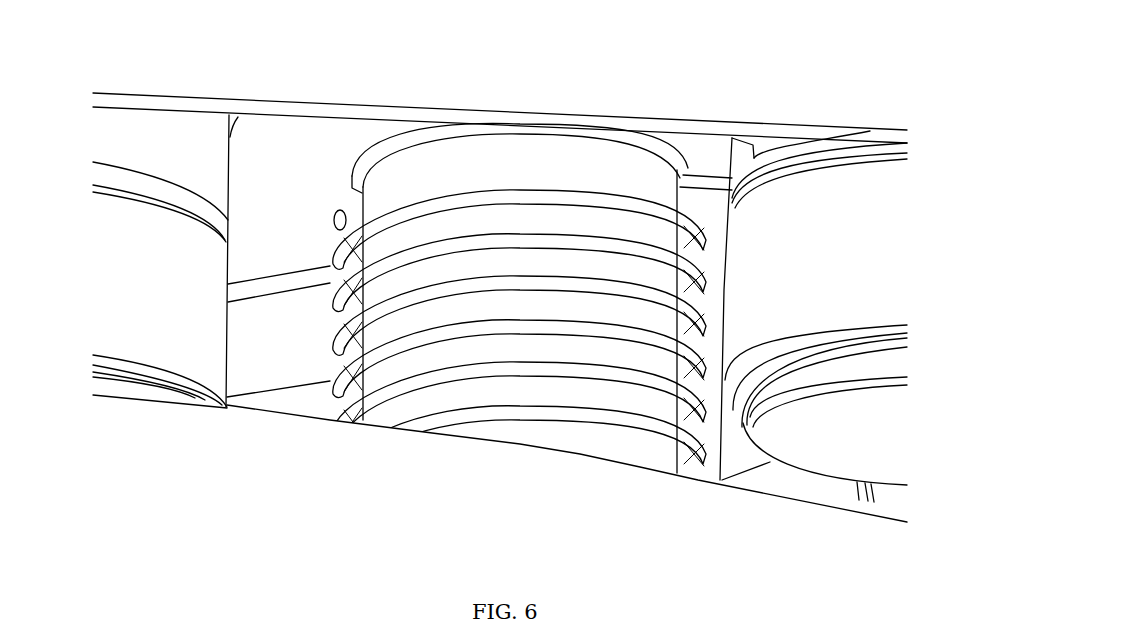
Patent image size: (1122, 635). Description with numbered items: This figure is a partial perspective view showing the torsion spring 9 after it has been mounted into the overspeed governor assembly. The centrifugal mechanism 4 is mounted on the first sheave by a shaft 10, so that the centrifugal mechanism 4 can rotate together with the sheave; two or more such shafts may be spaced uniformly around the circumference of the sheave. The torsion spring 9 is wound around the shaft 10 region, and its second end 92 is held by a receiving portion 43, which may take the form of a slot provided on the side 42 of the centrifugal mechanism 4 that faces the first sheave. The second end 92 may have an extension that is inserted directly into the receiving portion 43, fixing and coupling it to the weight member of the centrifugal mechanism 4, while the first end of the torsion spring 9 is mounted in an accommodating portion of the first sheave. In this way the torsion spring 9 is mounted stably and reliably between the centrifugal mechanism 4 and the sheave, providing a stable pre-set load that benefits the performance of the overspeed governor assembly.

The centrifugal mechanism 4 is at (705, 152).
The torsion spring 9 is at (550, 410).
The shaft 10 is at (580, 173).
The side of the centrifugal mechanism 42 is at (252, 145).
The receiving portion 43 is at (337, 212).
The second end of the torsion spring 92 is at (343, 210).